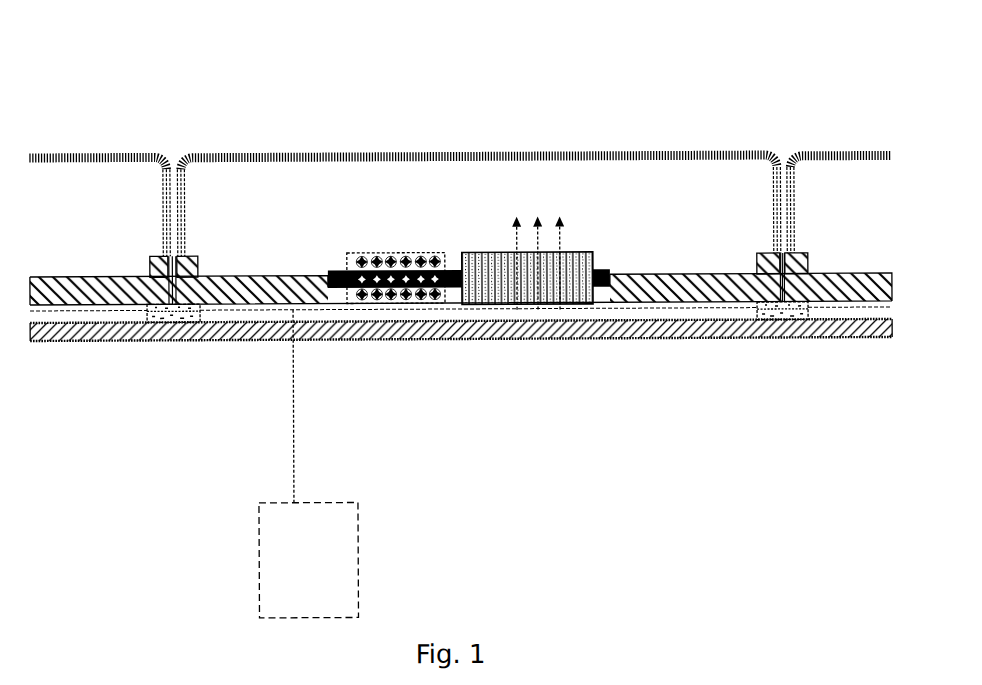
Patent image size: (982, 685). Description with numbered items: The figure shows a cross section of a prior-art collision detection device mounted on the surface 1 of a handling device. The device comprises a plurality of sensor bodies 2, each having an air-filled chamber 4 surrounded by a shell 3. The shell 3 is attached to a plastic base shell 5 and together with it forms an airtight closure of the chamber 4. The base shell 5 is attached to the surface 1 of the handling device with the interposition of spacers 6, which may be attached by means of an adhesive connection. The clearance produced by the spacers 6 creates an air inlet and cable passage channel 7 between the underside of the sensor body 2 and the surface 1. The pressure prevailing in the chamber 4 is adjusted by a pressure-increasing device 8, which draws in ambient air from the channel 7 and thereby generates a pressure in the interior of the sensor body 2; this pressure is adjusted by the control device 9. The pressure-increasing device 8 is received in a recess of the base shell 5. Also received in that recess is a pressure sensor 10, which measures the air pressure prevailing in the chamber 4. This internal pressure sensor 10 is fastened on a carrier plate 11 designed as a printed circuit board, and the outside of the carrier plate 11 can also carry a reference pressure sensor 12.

The surface 1 is at (852, 343).
The sensor body 2 is at (460, 161).
The shell 3 is at (94, 153).
The air-filled chamber 4 is at (202, 172).
The base shell 5 is at (267, 301).
The spacers 6 is at (181, 322).
The air inlet and cable passage channel 7 is at (46, 311).
The pressure-increasing device 8 is at (479, 255).
The control device 9 is at (322, 569).
The pressure sensor 10 is at (388, 273).
The carrier plate 11 is at (340, 272).
The reference pressure sensor 12 is at (365, 306).